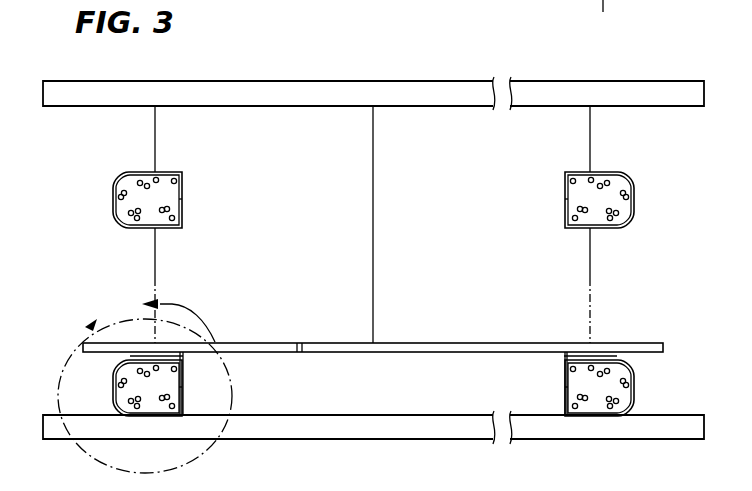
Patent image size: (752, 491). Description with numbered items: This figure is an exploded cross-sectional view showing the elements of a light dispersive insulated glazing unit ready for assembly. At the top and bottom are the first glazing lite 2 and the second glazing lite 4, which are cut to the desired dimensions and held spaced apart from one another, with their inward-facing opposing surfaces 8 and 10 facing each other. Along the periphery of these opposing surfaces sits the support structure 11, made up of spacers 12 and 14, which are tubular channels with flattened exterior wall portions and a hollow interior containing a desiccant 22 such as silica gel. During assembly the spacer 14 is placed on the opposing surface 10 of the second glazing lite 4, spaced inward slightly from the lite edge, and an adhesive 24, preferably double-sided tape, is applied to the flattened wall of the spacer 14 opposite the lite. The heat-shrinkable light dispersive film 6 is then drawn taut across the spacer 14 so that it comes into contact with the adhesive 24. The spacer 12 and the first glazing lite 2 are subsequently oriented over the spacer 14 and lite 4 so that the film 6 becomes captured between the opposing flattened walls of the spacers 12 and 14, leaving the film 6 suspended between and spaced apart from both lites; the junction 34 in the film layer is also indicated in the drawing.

The first glazing lite 2 is at (326, 90).
The second glazing lite 4 is at (428, 440).
The light dispersive film 6 is at (478, 310).
The opposing surface 8 is at (443, 108).
The opposing surface 10 is at (347, 416).
The support structure 11 is at (603, 14).
The spacer 12 is at (100, 199).
The spacer 14 is at (97, 383).
The desiccant 22 is at (168, 400).
The adhesive 24 is at (166, 355).
The joint 34 is at (303, 332).